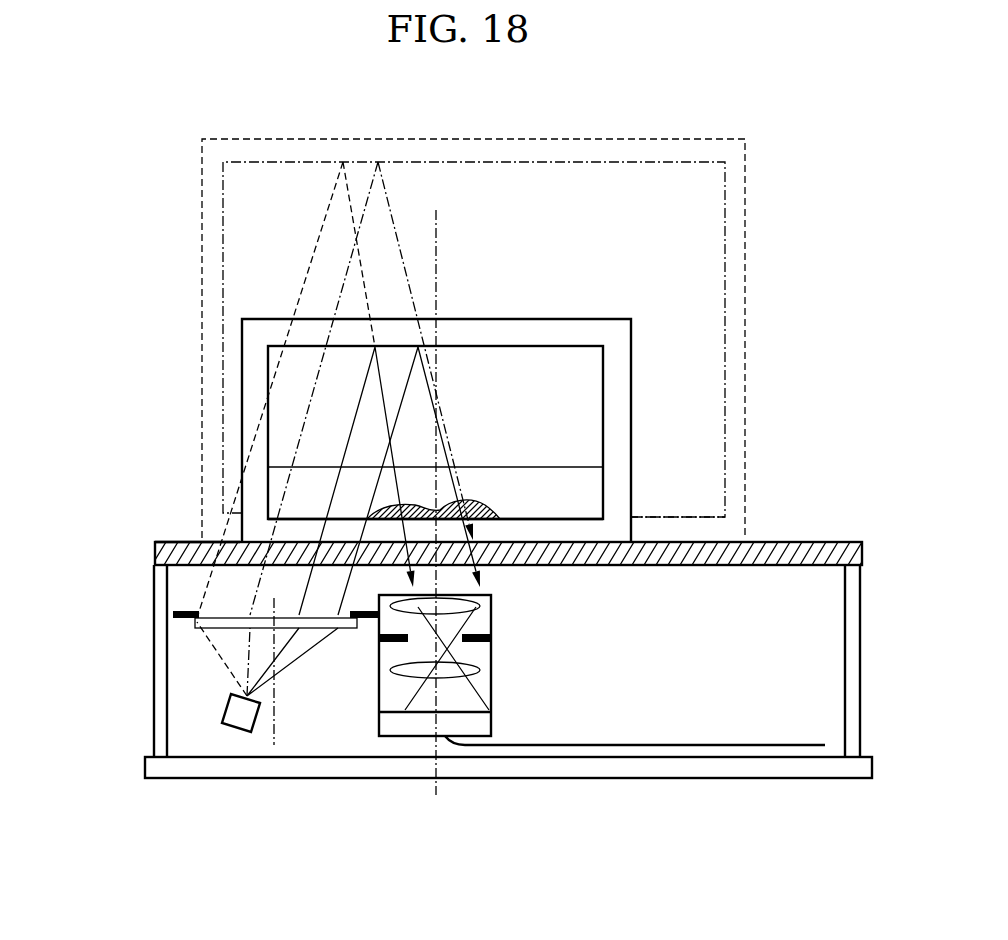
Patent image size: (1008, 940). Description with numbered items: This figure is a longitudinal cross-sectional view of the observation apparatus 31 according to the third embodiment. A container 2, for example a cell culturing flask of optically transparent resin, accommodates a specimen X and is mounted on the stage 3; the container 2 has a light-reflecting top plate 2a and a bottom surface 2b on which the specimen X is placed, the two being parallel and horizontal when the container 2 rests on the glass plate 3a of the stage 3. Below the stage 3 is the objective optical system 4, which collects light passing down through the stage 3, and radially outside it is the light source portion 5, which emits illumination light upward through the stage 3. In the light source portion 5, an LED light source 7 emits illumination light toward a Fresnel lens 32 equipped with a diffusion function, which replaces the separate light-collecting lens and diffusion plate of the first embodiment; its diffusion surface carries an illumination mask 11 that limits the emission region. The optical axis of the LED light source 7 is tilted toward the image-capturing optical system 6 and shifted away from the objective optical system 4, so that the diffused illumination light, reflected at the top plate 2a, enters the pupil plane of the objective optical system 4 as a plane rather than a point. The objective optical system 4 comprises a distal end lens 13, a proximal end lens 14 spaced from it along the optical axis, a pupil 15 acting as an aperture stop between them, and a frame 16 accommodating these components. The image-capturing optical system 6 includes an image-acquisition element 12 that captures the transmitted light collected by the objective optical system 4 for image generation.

The observation apparatus 31 is at (127, 98).
The container 2 is at (283, 121).
The top plate 2a is at (645, 164).
The bottom surface 2b is at (522, 518).
The specimen X is at (420, 500).
The stage 3 is at (128, 539).
The glass plate 3a is at (163, 541).
The light source portion 5 is at (118, 671).
The image-capturing optical system 6 is at (610, 614).
The illumination mask 11 is at (193, 615).
The Fresnel lens 32 is at (198, 626).
The LED light source 7 is at (240, 734).
The objective optical system 4 is at (509, 695).
The frame 16 is at (378, 690).
The distal end lens 13 is at (470, 604).
The pupil 15 is at (481, 637).
The proximal end lens 14 is at (481, 668).
The image-acquisition element 12 is at (409, 727).